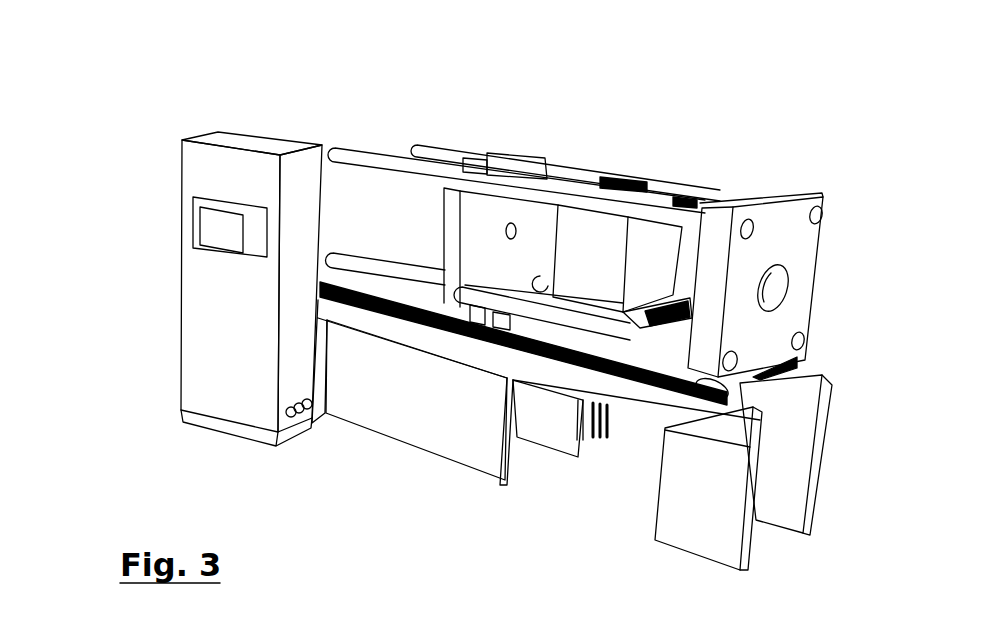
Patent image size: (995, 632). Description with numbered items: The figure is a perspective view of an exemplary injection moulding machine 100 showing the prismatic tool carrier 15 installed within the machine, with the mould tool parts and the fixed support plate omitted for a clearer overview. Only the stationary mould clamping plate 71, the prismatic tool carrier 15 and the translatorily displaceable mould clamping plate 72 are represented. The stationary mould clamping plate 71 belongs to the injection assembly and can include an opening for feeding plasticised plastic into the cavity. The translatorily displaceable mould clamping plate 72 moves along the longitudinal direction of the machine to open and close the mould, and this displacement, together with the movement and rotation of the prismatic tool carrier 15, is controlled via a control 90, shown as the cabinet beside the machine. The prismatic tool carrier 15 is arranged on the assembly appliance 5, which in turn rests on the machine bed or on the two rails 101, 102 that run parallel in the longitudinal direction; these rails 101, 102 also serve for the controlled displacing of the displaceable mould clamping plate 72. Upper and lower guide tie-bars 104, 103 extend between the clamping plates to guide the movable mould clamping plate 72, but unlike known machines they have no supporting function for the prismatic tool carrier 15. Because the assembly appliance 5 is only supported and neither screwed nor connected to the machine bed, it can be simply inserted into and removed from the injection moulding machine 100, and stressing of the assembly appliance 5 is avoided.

The injection moulding machine 100 is at (145, 114).
The control 90 is at (183, 289).
The upper guide tie-bars 104 is at (440, 143).
The lower guide tie-bars 103 is at (375, 267).
The translatorily displaceable mould clamping plate 72 is at (500, 152).
The prismatic tool carrier 15 is at (598, 238).
The stationary mould clamping plate 71 is at (787, 200).
The assembly appliance 5 is at (563, 338).
The rail 101 is at (697, 403).
The rail 102 is at (745, 382).